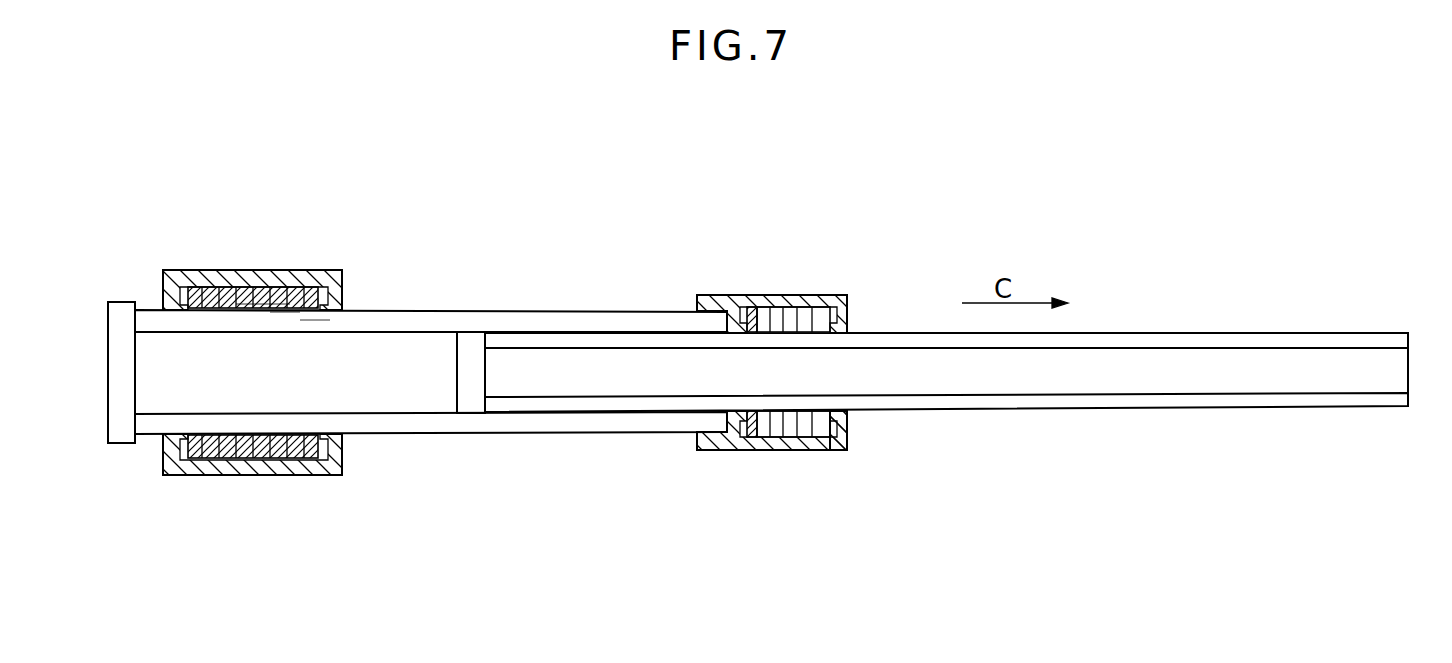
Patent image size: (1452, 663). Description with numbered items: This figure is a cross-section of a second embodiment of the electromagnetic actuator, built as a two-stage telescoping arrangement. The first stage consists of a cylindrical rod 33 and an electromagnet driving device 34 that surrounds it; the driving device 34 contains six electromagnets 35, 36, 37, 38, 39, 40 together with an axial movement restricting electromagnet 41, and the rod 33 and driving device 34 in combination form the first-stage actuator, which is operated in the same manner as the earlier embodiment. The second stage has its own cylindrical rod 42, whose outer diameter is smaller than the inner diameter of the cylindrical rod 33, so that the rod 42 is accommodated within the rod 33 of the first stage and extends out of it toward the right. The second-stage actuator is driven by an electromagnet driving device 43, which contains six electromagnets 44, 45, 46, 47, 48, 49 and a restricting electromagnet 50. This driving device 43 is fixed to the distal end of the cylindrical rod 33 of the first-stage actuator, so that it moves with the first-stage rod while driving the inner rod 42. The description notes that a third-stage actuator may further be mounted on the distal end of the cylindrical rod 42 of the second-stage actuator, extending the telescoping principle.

The cylindrical rod 33 is at (403, 434).
The electromagnet driving device 34 is at (242, 476).
The electromagnet 35 is at (222, 287).
The electromagnet 36 is at (246, 287).
The electromagnet 37 is at (264, 285).
The electromagnet 38 is at (272, 312).
The electromagnet 39 is at (282, 318).
The electromagnet 40 is at (312, 318).
The axial movement restricting electromagnet 41 is at (200, 285).
The cylindrical rod 42 is at (1050, 408).
The electromagnet driving device 43 is at (775, 451).
The electromagnet 44 is at (758, 307).
The electromagnet 45 is at (778, 307).
The electromagnet 46 is at (797, 305).
The electromagnet 47 is at (795, 439).
The electromagnet 48 is at (810, 439).
The electromagnet 49 is at (848, 451).
The restricting electromagnet 50 is at (752, 306).